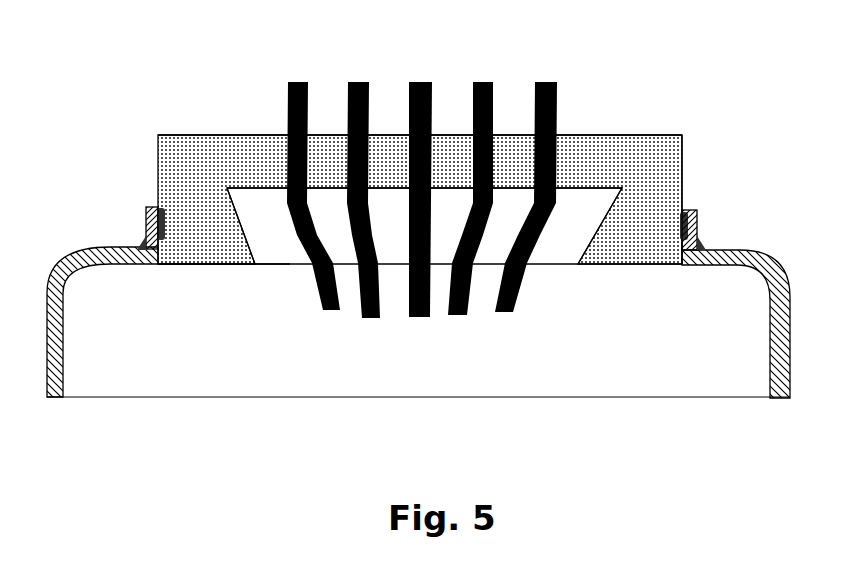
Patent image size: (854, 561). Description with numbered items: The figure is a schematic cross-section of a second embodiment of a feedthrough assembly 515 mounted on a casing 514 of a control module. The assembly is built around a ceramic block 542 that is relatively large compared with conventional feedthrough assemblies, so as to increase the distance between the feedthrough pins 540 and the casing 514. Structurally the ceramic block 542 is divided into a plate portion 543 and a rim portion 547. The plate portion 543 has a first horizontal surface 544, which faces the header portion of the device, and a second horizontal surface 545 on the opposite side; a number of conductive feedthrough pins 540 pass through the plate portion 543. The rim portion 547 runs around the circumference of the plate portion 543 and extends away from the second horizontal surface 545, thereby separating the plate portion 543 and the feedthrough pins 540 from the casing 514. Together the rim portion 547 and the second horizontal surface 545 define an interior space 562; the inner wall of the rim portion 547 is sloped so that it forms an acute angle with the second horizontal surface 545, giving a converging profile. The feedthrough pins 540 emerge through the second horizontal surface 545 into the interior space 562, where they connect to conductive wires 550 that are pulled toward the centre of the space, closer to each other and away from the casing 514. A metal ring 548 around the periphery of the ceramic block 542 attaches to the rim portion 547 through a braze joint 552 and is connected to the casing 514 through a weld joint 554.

The casing 514 is at (770, 345).
The feedthrough assembly 515 is at (112, 118).
The feedthrough pins 540 is at (492, 100).
The ceramic block 542 is at (649, 138).
The plate portion 543 is at (210, 120).
The first horizontal surface 544 is at (233, 136).
The second horizontal surface 545 is at (227, 189).
The rim portion 547 is at (208, 241).
The metal ring 548 is at (698, 212).
The conductive wires 550 is at (552, 210).
The braze joint 552 is at (686, 215).
The weld joint 554 is at (701, 247).
The interior space 562 is at (284, 249).